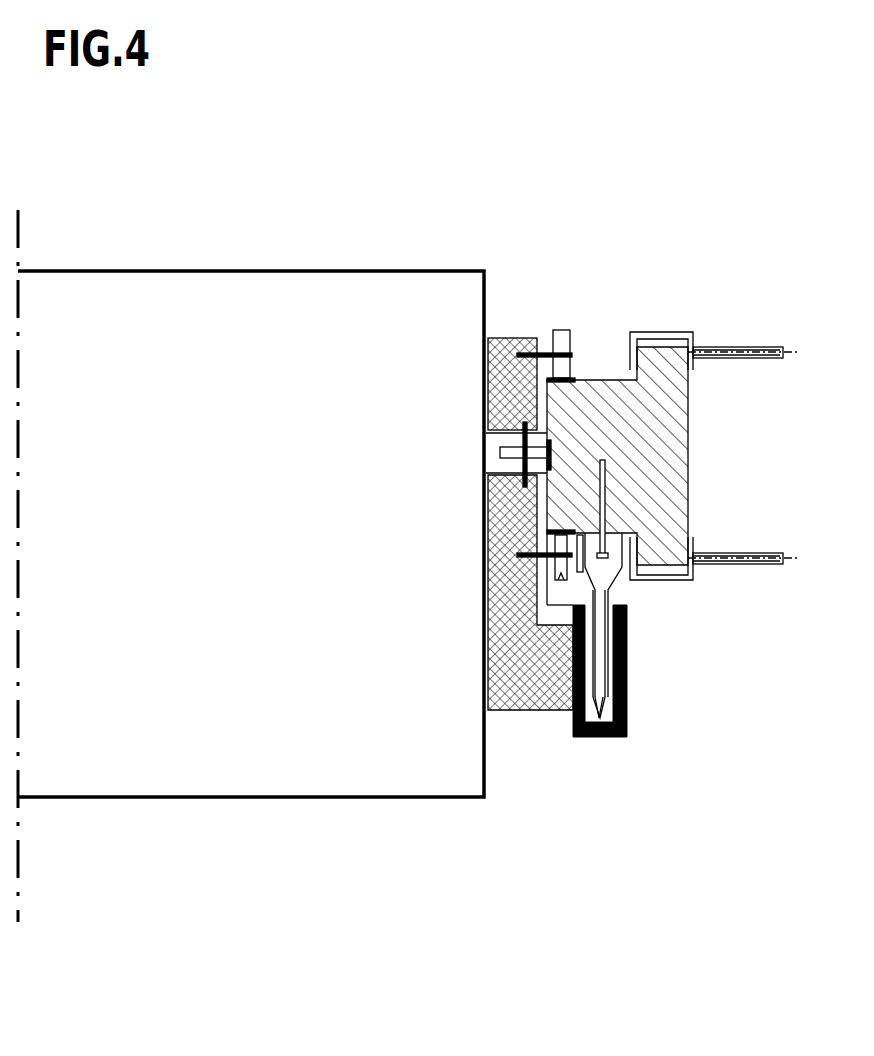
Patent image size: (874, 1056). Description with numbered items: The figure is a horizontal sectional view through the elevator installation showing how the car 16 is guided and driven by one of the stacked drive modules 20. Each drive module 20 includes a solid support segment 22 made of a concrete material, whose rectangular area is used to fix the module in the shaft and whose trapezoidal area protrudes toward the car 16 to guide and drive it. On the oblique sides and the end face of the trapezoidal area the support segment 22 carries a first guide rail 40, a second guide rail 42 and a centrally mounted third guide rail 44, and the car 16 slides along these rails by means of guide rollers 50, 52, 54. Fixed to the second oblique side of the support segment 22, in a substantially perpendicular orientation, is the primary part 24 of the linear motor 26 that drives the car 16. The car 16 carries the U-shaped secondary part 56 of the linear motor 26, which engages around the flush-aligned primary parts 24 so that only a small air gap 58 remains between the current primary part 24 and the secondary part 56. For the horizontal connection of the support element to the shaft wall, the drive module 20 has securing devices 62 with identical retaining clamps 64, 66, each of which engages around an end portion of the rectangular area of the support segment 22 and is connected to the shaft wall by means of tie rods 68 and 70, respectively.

The car 16 is at (228, 266).
The drive module 20 is at (604, 344).
The support segment 22 is at (705, 435).
The primary part 24 is at (600, 724).
The linear motor 26 is at (640, 606).
The first guide rail 40 is at (572, 377).
The second guide rail 42 is at (530, 548).
The third guide rail 44 is at (500, 500).
The guide roller 50 is at (562, 330).
The guide roller 52 is at (498, 456).
The guide roller 54 is at (548, 587).
The secondary part 56 is at (628, 672).
The air gap 58 is at (578, 738).
The securing device 62 is at (715, 322).
The retaining clamp 64 is at (658, 578).
The retaining clamp 66 is at (661, 339).
The tie rod 68 is at (742, 565).
The tie rod 70 is at (742, 349).